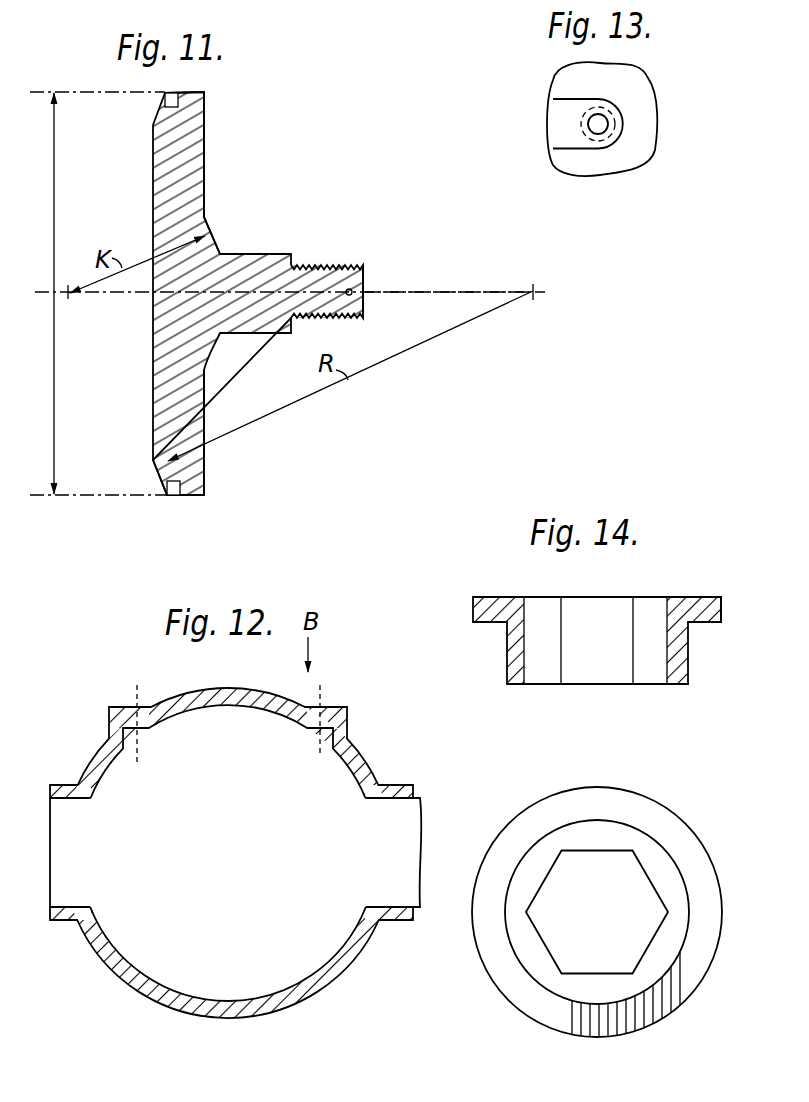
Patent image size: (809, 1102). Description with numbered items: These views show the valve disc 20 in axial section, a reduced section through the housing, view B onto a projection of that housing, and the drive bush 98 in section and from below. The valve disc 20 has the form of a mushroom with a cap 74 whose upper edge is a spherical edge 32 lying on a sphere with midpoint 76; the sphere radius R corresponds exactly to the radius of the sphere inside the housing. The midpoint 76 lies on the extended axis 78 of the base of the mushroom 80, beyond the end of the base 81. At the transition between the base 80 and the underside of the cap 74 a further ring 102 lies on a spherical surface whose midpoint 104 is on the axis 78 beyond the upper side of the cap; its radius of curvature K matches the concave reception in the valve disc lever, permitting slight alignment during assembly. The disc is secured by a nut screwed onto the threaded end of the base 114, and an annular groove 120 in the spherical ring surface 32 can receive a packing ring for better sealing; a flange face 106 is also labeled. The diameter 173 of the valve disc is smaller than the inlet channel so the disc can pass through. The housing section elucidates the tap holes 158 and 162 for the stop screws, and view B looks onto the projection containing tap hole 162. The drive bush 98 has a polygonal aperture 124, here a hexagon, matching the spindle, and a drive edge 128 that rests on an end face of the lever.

In FIG. 11, the valve disc 20 is at (350, 207).
In FIG. 11, the spherical edge 32 is at (157, 112).
In FIG. 11, the cap 74 is at (206, 130).
In FIG. 11, the sphere midpoint 76 is at (533, 294).
In FIG. 11, the axis 78 is at (447, 292).
In FIG. 11, the base of the mushroom 80 is at (270, 254).
In FIG. 11, the end of the base 81 is at (361, 282).
In FIG. 11, the ring 102 is at (207, 224).
In FIG. 11, the midpoint 104 is at (70, 296).
In FIG. 11, the flange face 106 is at (152, 372).
In FIG. 11, the threaded end of the base 114 is at (333, 264).
In FIG. 11, the annular groove 120 is at (180, 483).
In FIG. 11, the diameter of the valve disc 173 is at (54, 238).
In FIG. 12, the tap hole 158 is at (140, 698).
In FIG. 13, the tap hole 162 is at (605, 124).
In FIG. 12, the tap hole 162 is at (322, 697).
In FIG. 14, the drive bush 98 is at (700, 596).
In FIG. 14, the polygonal aperture 124 is at (595, 858).
In FIG. 14, the drive edge 128 is at (721, 612).